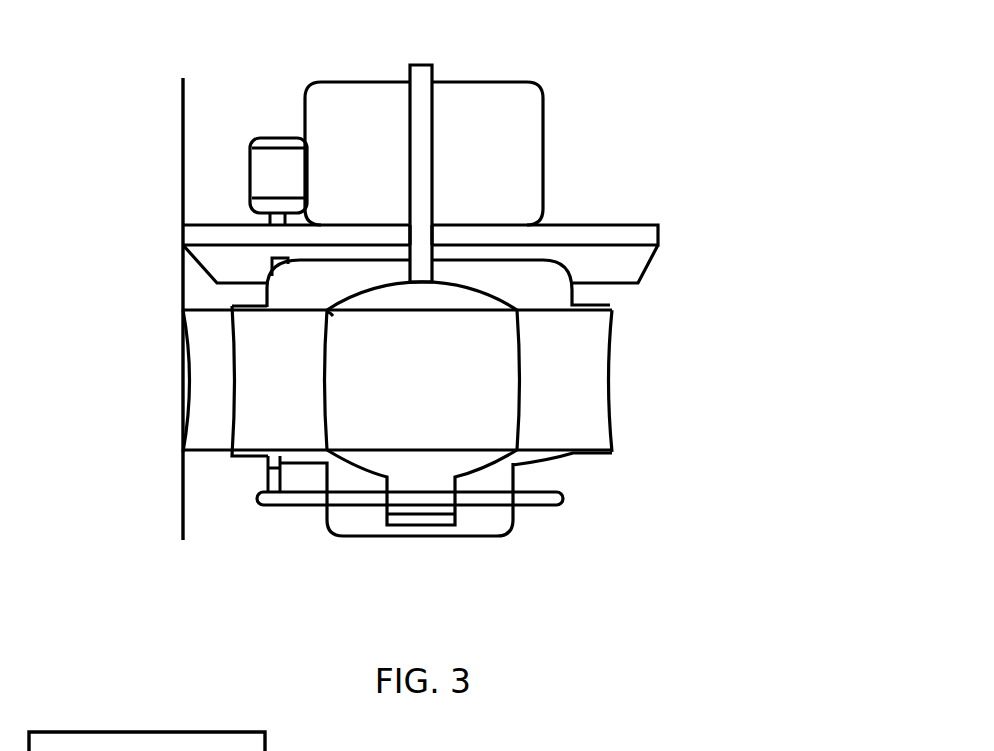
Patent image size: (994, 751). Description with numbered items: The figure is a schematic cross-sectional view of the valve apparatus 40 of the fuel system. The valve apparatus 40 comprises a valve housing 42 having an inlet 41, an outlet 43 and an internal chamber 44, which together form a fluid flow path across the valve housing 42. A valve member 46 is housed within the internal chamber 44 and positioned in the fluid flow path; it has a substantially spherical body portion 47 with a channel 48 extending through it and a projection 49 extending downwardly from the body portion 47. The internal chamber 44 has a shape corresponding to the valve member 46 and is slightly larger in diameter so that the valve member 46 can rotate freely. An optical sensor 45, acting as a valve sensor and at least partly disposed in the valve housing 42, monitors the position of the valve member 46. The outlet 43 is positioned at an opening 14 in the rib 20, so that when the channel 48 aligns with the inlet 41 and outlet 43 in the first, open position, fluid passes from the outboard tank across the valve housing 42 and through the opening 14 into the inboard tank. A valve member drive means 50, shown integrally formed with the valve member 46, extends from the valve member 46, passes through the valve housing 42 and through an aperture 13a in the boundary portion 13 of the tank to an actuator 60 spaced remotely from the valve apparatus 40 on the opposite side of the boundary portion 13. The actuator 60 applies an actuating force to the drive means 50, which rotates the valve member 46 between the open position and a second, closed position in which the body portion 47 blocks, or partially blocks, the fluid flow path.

The boundary portion 13 is at (633, 225).
The aperture 13a is at (430, 238).
The opening 14 is at (183, 310).
The rib 20 is at (183, 142).
The valve apparatus 40 is at (581, 530).
The inlet 41 is at (618, 397).
The valve housing 42 is at (573, 298).
The outlet 43 is at (142, 393).
The internal chamber 44 is at (475, 463).
The optical sensor 45 is at (455, 530).
The valve member 46 is at (374, 458).
The body portion 47 is at (468, 302).
The channel 48 is at (355, 313).
The projection 49 is at (390, 512).
The valve member drive means 50 is at (424, 65).
The actuator 60 is at (543, 147).